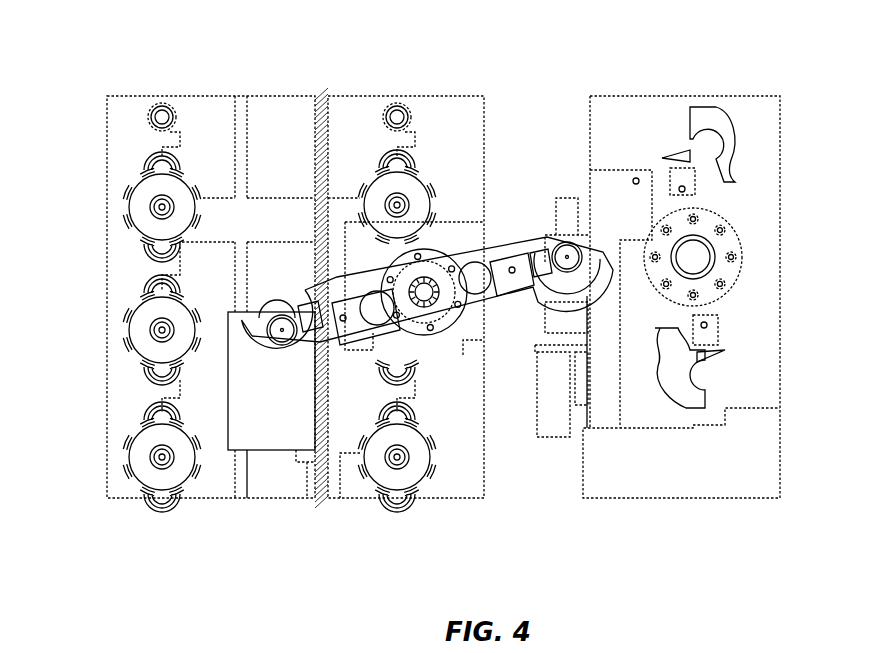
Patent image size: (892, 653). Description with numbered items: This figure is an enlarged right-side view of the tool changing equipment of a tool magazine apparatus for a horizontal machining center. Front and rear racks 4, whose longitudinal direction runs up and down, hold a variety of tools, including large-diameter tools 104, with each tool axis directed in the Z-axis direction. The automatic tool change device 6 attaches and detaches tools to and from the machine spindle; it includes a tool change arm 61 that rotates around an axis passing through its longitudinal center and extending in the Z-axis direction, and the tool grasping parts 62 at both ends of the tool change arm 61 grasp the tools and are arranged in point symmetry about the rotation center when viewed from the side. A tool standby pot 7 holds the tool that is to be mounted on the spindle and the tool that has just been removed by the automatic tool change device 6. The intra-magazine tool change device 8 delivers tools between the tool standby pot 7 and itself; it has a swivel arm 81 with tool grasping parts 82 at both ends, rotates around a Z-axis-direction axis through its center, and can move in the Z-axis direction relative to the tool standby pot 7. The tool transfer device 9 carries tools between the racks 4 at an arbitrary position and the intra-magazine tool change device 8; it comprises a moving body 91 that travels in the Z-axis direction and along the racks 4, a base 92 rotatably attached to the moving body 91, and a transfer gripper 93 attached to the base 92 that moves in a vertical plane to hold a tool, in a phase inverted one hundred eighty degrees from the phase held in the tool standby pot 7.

The rack 4 is at (116, 106).
The automatic tool change device 6 is at (725, 207).
The tool standby pot 7 is at (558, 242).
The intra-magazine tool change device 8 is at (475, 262).
The tool transfer device 9 is at (277, 445).
The tool change arm 61 is at (725, 182).
The tool grasping part 62 is at (703, 110).
The swivel arm 81 is at (492, 305).
The tool grasping part 82 is at (275, 296).
The moving body 91 is at (243, 288).
The base 92 is at (243, 430).
The transfer gripper 93 is at (285, 343).
The large-diameter tool 104 is at (136, 214).